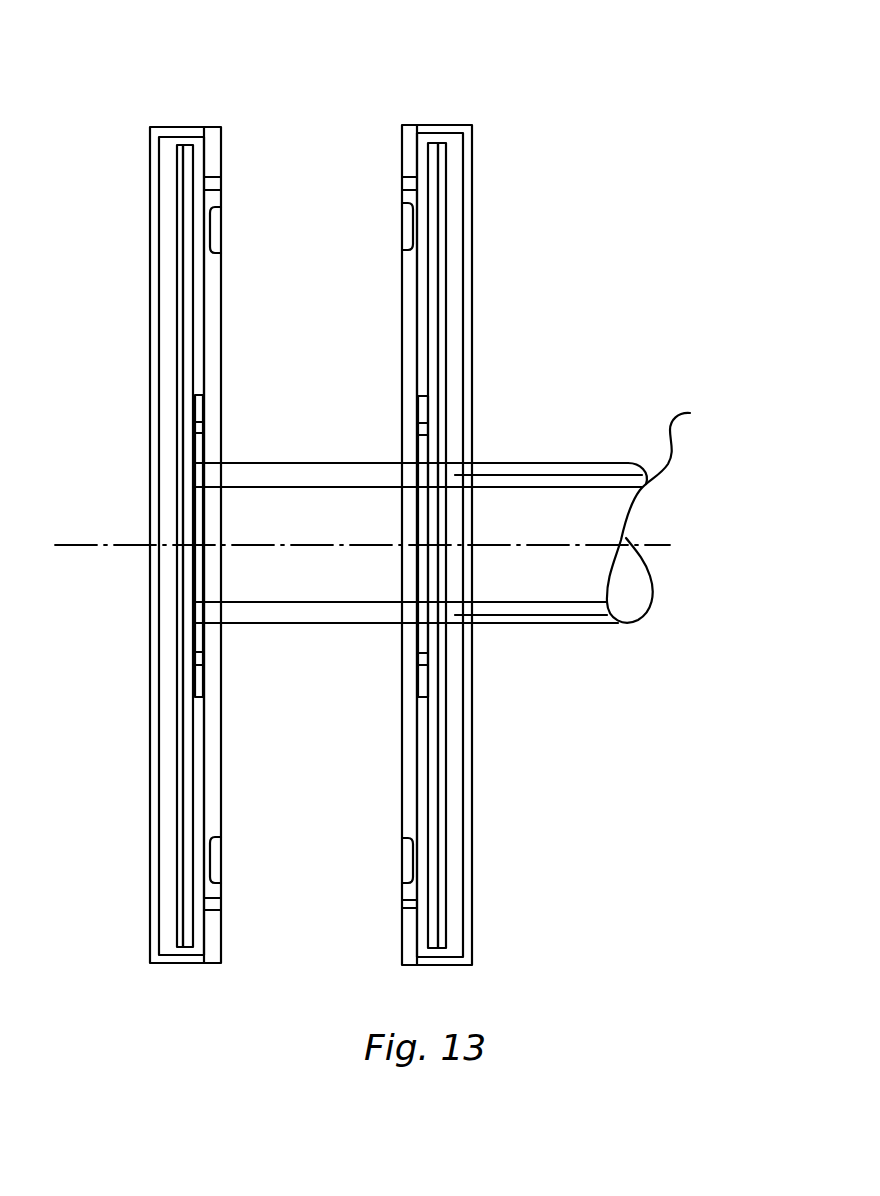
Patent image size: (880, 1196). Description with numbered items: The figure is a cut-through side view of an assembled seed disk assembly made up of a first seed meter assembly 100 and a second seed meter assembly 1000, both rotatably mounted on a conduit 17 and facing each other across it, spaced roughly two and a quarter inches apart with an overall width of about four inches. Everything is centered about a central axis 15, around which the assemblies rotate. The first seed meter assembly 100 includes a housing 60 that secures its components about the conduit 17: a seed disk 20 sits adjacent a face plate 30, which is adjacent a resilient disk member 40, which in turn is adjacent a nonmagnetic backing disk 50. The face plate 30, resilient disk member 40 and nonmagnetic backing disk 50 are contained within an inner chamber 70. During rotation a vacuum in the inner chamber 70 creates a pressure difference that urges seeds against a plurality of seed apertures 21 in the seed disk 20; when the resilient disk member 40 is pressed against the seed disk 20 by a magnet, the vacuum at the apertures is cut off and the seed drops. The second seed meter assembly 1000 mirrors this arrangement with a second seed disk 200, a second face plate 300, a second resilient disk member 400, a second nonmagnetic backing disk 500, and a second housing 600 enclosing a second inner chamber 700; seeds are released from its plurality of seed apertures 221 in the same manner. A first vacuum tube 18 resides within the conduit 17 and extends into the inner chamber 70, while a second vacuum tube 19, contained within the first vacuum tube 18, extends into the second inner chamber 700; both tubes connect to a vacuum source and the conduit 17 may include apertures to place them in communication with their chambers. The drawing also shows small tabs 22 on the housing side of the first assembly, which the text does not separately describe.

The second seed meter assembly 1000 is at (139, 210).
The second inner chamber 700 is at (168, 235).
The second housing 600 is at (157, 127).
The second nonmagnetic backing disk 500 is at (182, 137).
The second resilient disk member 400 is at (197, 128).
The second face plate 300 is at (199, 395).
The second seed disk 200 is at (217, 127).
The plurality of seed apertures 221 is at (221, 184).
The first seed meter assembly 100 is at (497, 258).
The inner chamber 70 is at (457, 315).
The housing 60 is at (465, 125).
The nonmagnetic backing disk 50 is at (445, 132).
The resilient disk member 40 is at (437, 130).
The face plate 30 is at (422, 396).
The seed disk 20 is at (408, 122).
The plurality of seed apertures 21 is at (402, 184).
The protrusion 22 is at (405, 230).
The conduit 17 is at (540, 463).
The first vacuum tube 18 is at (557, 615).
The second vacuum tube 19 is at (663, 512).
The central axis 15 is at (70, 545).